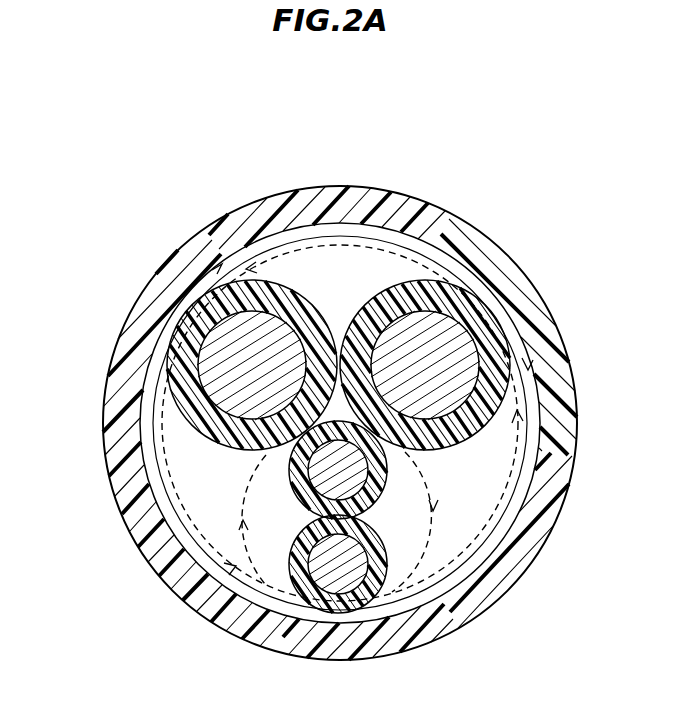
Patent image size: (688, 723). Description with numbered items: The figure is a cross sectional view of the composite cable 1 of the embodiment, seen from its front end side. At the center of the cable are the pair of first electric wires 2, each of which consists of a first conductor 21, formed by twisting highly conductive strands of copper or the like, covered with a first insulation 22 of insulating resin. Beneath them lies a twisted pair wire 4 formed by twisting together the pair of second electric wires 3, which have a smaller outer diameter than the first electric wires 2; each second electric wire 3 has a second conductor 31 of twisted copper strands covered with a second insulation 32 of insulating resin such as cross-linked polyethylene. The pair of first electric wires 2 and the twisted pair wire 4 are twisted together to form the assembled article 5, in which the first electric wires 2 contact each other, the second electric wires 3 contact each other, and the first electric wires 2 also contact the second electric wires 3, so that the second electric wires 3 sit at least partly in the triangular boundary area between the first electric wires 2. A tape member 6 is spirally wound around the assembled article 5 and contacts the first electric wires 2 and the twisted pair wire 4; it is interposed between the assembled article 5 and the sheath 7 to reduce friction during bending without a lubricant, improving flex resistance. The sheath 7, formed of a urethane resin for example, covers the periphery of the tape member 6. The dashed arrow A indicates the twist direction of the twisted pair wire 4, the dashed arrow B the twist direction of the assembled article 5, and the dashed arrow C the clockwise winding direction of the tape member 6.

The composite cable 1 is at (188, 200).
The first electric wire 2 is at (323, 316).
The first conductor 21 is at (447, 333).
The first insulation 22 is at (498, 332).
The second electric wire 3 is at (263, 568).
The second conductor 31 is at (333, 583).
The second insulation 32 is at (353, 603).
The twisted pair wire 4 is at (256, 576).
The assembled article 5 is at (472, 475).
The tape member 6 is at (536, 431).
The sheath 7 is at (558, 392).
The dashed arrow A is at (240, 522).
The dashed arrow B is at (343, 247).
The dashed arrow C is at (177, 310).